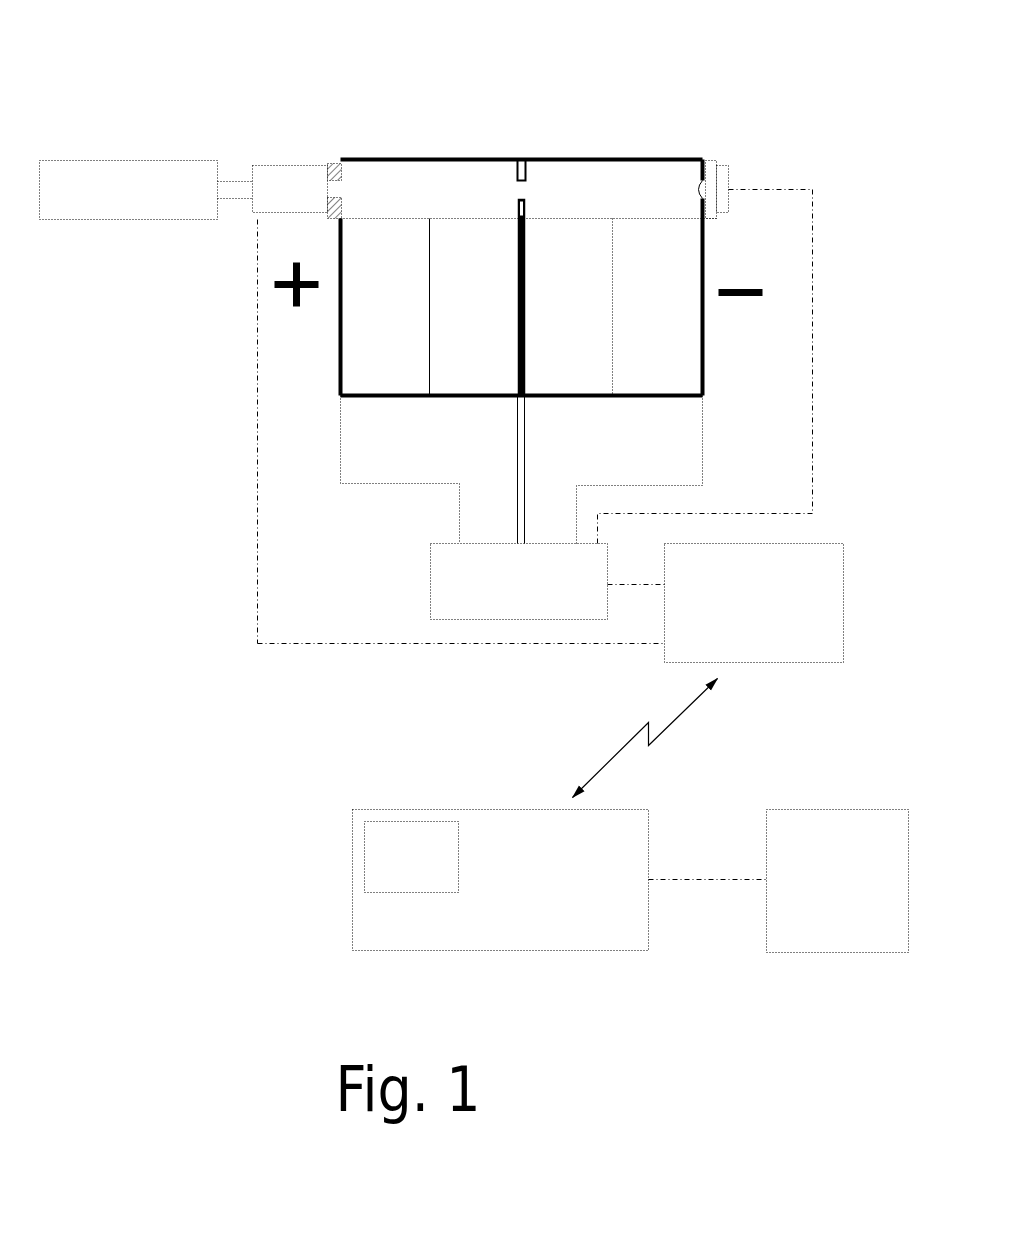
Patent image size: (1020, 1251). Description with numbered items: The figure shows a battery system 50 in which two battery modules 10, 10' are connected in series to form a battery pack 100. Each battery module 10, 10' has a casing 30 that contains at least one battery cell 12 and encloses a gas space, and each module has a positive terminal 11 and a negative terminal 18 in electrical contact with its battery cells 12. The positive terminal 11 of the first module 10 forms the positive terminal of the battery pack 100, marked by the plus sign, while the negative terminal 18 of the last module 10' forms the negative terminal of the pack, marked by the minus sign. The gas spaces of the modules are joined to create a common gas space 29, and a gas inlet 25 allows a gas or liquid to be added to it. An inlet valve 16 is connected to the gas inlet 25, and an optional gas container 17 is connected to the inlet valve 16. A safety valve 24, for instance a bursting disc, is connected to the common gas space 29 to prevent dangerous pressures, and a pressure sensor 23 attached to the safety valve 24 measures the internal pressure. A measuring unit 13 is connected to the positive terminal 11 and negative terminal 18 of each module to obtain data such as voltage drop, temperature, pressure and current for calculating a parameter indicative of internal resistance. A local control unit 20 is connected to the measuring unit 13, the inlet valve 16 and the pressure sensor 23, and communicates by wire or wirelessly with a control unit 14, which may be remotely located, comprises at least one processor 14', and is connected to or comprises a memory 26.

The battery system 50 is at (258, 95).
The battery pack 100 is at (407, 100).
The battery module 10 is at (429, 236).
The battery module 10' is at (614, 234).
The common gas space 29 is at (487, 183).
The battery cell 12 is at (521, 302).
The gas inlet 25 is at (332, 158).
The inlet valve 16 is at (290, 189).
The gas container 17 is at (146, 190).
The pressure sensor 23 is at (725, 183).
The safety valve 24 is at (718, 160).
The casing 30 is at (462, 400).
The negative terminal 18 is at (517, 413).
The positive terminal 11 is at (340, 442).
The measuring unit 13 is at (548, 582).
The local control unit 20 is at (708, 494).
The control unit 14 is at (560, 880).
The processor 14' is at (412, 857).
The memory 26 is at (838, 881).